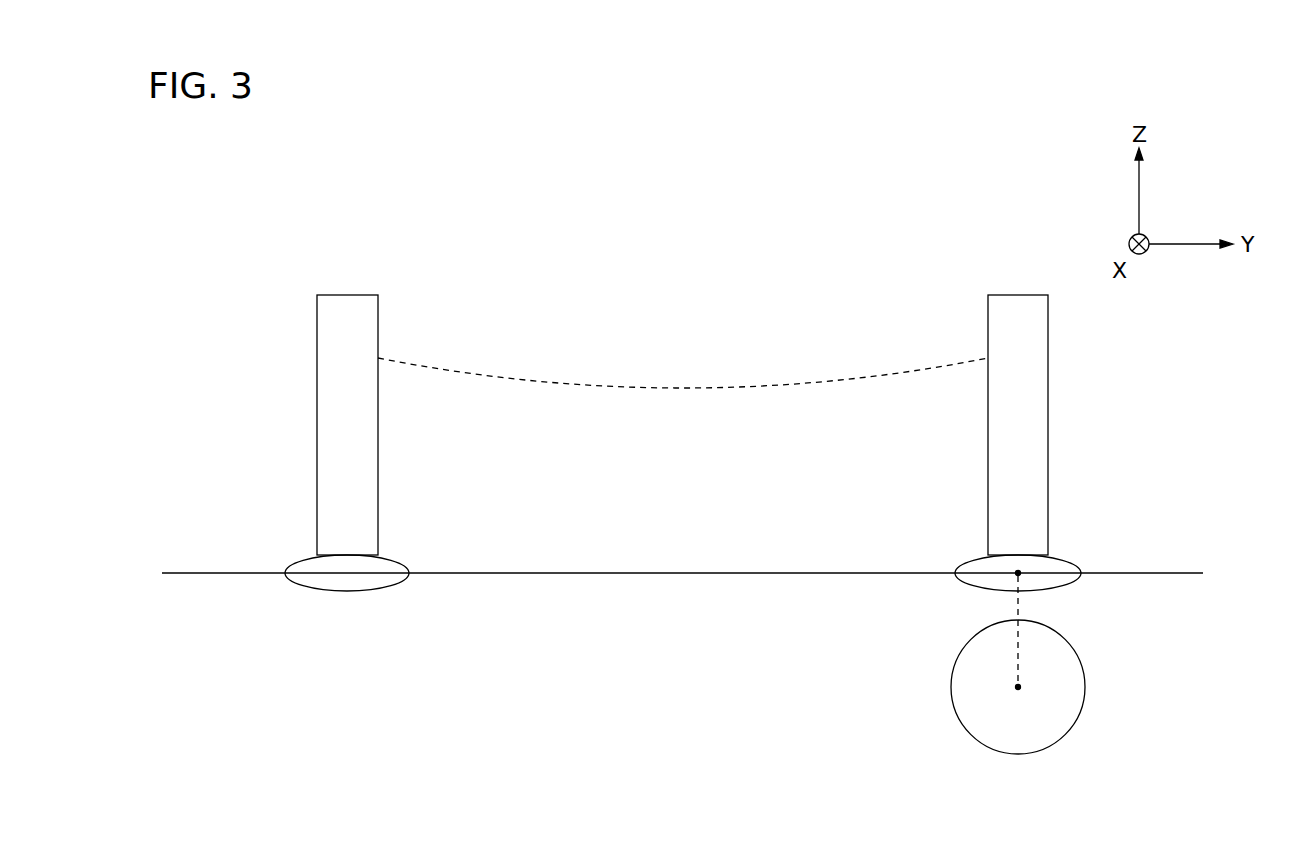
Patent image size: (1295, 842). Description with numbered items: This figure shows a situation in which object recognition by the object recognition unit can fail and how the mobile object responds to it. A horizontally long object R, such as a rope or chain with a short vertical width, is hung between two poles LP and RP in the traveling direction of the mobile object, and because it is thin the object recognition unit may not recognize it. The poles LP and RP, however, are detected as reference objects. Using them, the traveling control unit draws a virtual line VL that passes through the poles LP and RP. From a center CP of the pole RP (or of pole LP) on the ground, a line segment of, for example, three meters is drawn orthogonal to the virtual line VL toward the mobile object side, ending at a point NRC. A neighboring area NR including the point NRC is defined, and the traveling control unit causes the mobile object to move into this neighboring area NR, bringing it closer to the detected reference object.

The pole LP is at (317, 460).
The pole RP is at (1048, 460).
The horizontally long object R is at (704, 370).
The virtual line VL is at (701, 574).
The center of the pole CP is at (1024, 576).
The neighboring area NR is at (1085, 685).
The point NRC is at (1015, 687).